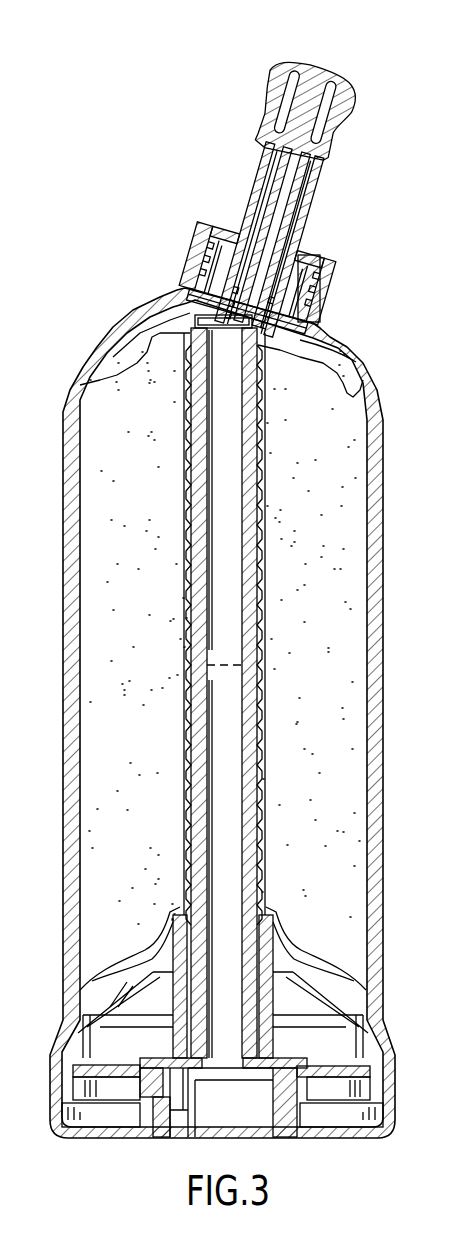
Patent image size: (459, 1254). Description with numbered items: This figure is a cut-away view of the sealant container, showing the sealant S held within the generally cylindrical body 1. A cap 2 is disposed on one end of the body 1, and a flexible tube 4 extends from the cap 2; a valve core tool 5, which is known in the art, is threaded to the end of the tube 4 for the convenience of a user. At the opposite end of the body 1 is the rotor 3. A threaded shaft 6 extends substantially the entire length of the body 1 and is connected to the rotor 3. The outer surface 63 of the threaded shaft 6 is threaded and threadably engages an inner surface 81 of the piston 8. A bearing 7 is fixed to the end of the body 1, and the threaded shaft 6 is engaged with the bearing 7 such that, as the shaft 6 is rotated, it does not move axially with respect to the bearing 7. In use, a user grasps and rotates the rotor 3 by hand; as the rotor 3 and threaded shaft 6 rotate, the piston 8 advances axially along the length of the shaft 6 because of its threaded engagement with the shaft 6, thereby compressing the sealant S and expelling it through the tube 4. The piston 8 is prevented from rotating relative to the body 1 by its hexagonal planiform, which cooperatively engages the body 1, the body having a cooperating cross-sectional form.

The body 1 is at (383, 481).
The cap 2 is at (196, 240).
The rotor 3 is at (350, 1140).
The flexible tube 4 is at (262, 186).
The valve core tool 5 is at (268, 90).
The threaded shaft 6 is at (225, 600).
The outer surface 63 is at (186, 783).
The bearing 7 is at (120, 1085).
The piston 8 is at (320, 1006).
The inner surface 81 is at (272, 998).
The sealant S is at (322, 722).